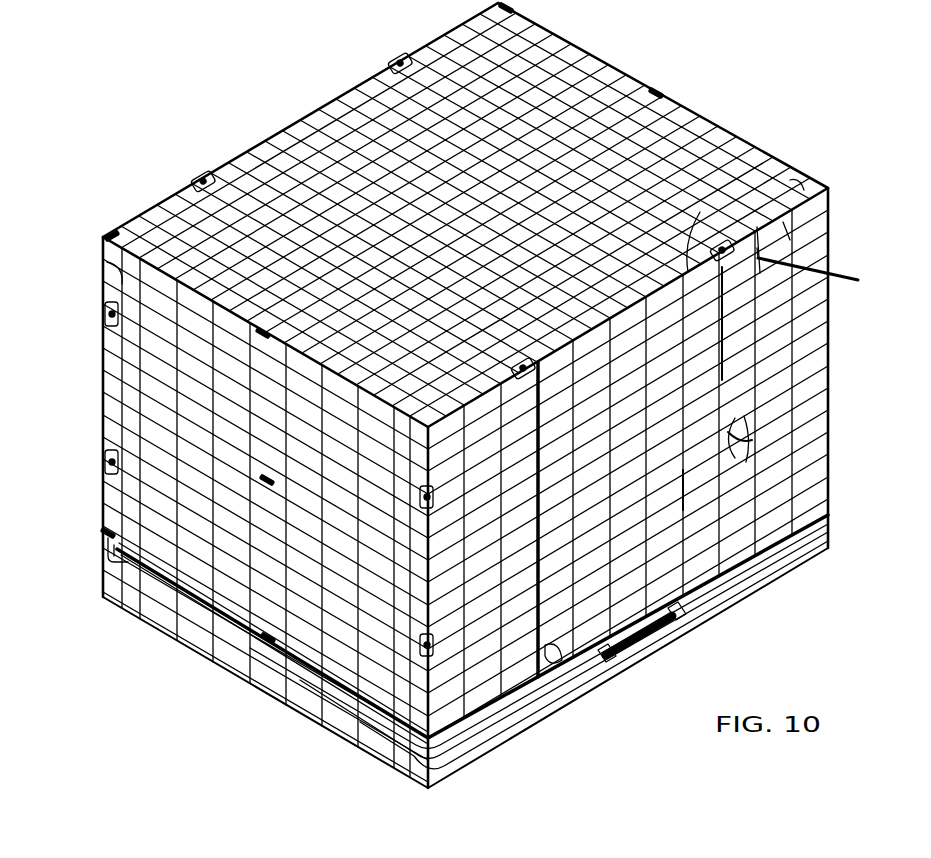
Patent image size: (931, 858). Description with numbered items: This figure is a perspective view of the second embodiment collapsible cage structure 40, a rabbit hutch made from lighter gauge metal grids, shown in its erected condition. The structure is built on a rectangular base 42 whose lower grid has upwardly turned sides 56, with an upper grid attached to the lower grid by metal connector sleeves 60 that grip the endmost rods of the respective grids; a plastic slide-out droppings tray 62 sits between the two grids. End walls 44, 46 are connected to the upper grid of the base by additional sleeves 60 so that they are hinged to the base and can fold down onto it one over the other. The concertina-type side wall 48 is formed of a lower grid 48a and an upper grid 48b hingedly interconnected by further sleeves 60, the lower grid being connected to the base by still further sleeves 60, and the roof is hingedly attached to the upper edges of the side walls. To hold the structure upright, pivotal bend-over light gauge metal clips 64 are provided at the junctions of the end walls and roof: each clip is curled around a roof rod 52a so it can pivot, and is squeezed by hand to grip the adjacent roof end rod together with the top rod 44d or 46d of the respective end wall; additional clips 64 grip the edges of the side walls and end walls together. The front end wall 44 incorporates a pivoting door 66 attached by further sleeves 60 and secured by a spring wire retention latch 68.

The collapsible cage structure 40 is at (279, 121).
The rectangular base 42 is at (438, 651).
The end wall 44 is at (659, 441).
The top rod of end wall 44d is at (803, 213).
The end wall 46 is at (225, 509).
The top rod of end wall 46d is at (170, 200).
The concertina-type side wall 48 is at (225, 509).
The lower grid of side wall 48a is at (150, 488).
The upper grid of side wall 48b is at (120, 275).
The rod of roof 52a is at (797, 184).
The upwardly turned sides 56 is at (132, 607).
The metal connector sleeve 60 is at (515, 12).
The slide-out droppings tray 62 is at (731, 586).
The bend-over metal clip 64 is at (396, 64).
The pivoting door 66 is at (688, 490).
The spring wire retention latch 68 is at (752, 440).